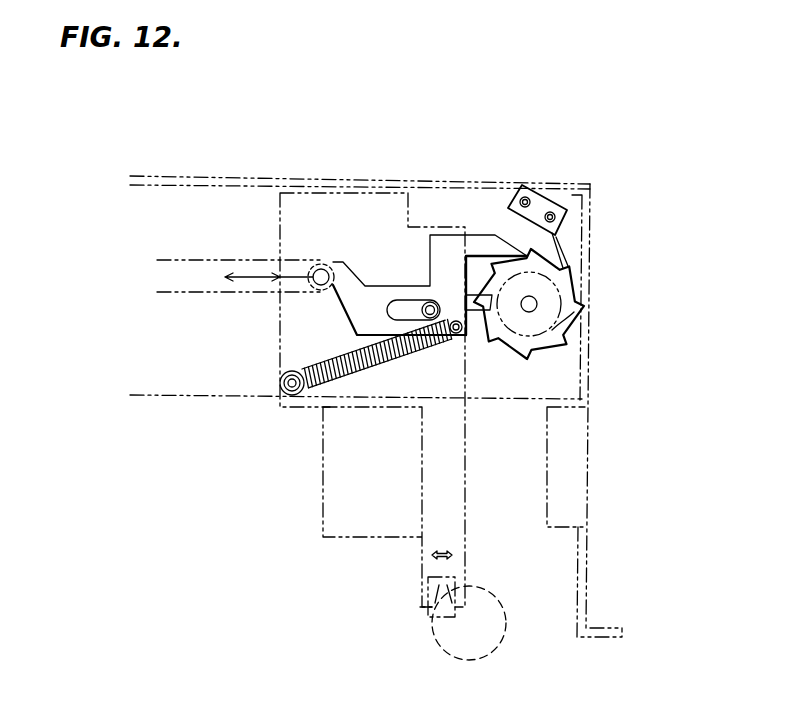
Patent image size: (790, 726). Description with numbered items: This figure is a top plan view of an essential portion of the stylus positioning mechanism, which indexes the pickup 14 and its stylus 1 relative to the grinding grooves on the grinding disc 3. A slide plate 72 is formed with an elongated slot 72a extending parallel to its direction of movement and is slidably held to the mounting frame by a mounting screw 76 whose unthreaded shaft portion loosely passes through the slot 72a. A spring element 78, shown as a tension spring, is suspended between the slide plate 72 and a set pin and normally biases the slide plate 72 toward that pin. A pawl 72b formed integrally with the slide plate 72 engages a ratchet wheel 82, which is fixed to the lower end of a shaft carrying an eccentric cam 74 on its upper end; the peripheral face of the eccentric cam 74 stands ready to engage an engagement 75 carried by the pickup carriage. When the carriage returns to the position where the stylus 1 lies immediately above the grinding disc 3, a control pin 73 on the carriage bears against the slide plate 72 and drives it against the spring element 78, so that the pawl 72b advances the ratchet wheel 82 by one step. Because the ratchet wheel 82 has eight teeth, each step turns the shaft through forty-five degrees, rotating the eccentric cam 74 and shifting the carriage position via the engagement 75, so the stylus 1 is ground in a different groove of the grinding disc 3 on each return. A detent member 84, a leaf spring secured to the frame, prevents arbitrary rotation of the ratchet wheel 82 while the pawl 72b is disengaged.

The stylus 1 is at (437, 643).
The grinding disc 3 is at (492, 625).
The pickup 14 is at (425, 610).
The slide plate 72 is at (358, 305).
The elongated slot 72a is at (388, 306).
The pawl 72b is at (512, 237).
The control pin 73 is at (322, 262).
The eccentric cam 74 is at (560, 287).
The engagement 75 is at (472, 310).
The mounting screw 76 is at (432, 302).
The spring element 78 is at (362, 355).
The ratchet wheel 82 is at (568, 333).
The detent member 84 is at (565, 213).